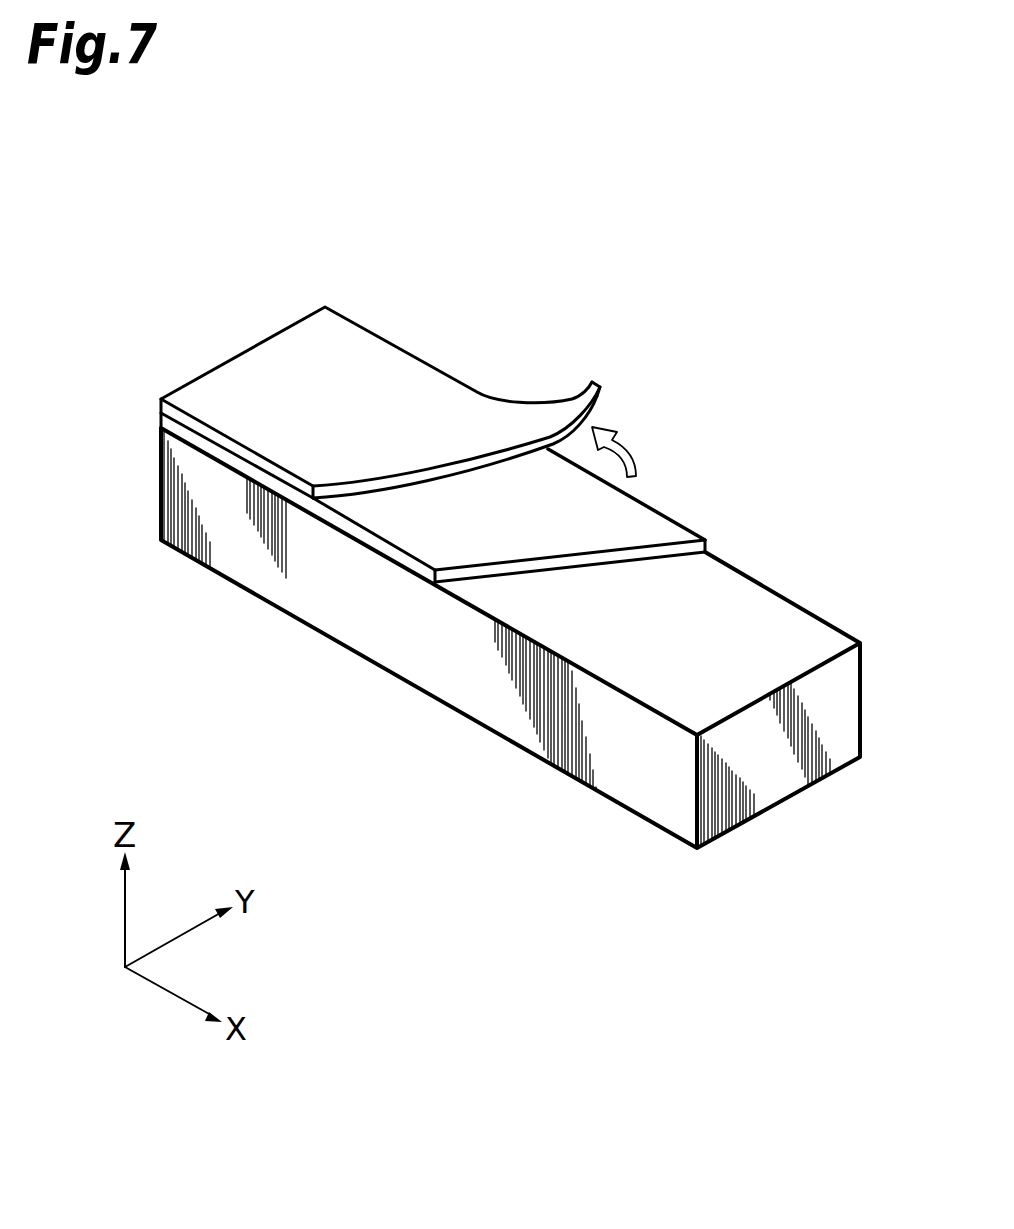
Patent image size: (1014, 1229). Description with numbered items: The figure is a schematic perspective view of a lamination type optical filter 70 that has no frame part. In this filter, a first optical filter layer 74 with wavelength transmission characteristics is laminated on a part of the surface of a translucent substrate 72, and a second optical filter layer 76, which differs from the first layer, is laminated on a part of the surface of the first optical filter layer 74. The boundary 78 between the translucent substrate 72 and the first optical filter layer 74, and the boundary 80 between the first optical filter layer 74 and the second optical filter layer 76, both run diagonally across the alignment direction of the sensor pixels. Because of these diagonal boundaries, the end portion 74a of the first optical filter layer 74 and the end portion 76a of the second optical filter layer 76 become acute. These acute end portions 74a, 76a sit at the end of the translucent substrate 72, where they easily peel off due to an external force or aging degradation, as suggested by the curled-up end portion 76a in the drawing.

The lamination type optical filter 70 is at (433, 284).
The translucent substrate 72 is at (795, 633).
The first optical filter layer 74 is at (482, 540).
The end portion of the first optical filter layer 74a is at (677, 533).
The second optical filter layer 76 is at (315, 387).
The end portion of the second optical filter layer 76a is at (574, 401).
The boundary between the translucent substrate and the first optical filter layer 78 is at (630, 563).
The boundary between the first optical filter layer and the second optical filter la 80 is at (390, 495).